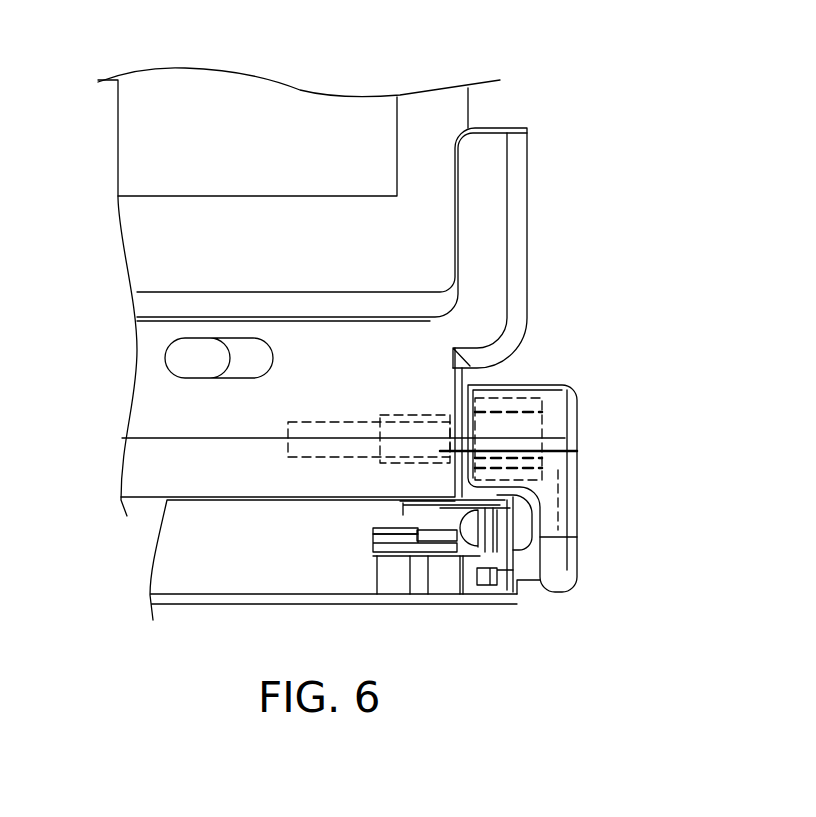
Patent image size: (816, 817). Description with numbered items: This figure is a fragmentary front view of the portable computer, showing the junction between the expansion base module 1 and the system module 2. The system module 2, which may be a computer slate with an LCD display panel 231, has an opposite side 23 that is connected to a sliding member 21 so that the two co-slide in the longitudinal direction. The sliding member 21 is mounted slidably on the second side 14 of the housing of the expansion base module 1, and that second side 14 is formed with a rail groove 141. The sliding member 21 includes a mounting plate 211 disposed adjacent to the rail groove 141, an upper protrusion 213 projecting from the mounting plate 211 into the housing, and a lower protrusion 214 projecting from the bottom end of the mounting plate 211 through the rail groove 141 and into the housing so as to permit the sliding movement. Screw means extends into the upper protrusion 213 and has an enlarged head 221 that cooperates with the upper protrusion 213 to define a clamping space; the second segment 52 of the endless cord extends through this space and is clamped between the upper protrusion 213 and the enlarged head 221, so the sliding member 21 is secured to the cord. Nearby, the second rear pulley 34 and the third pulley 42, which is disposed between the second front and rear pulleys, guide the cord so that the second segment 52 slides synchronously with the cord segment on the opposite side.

The expansion base module 1 is at (143, 562).
The system module 2 is at (518, 82).
The second side 14 is at (545, 536).
The rail groove 141 is at (474, 578).
The sliding member 21 is at (585, 471).
The mounting plate 211 is at (507, 577).
The upper protrusion 213 is at (485, 512).
The lower protrusion 214 is at (488, 580).
The enlarged head 221 is at (487, 524).
The side 23 is at (424, 113).
The LCD display panel 231 is at (253, 93).
The second rear pulley 34 is at (417, 524).
The third pulley 42 is at (375, 538).
The second segment 52 is at (490, 547).